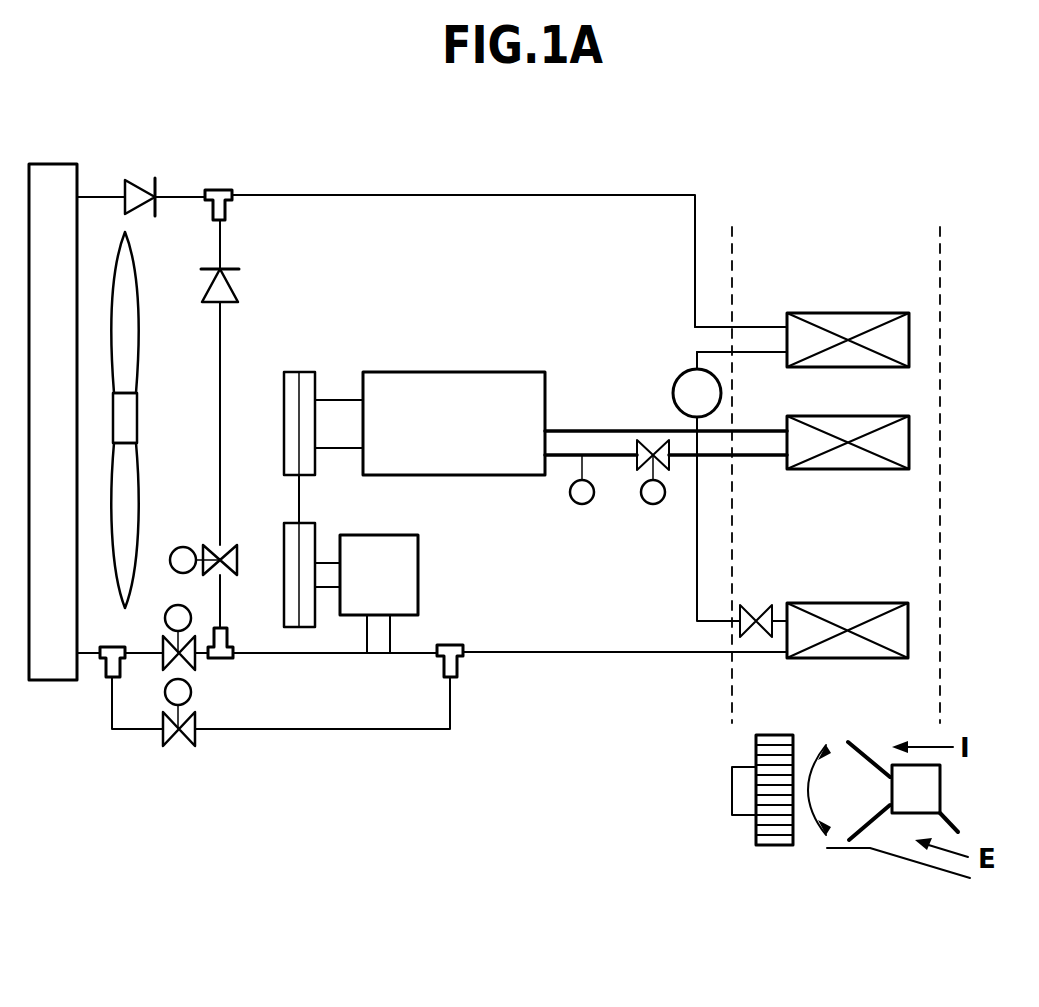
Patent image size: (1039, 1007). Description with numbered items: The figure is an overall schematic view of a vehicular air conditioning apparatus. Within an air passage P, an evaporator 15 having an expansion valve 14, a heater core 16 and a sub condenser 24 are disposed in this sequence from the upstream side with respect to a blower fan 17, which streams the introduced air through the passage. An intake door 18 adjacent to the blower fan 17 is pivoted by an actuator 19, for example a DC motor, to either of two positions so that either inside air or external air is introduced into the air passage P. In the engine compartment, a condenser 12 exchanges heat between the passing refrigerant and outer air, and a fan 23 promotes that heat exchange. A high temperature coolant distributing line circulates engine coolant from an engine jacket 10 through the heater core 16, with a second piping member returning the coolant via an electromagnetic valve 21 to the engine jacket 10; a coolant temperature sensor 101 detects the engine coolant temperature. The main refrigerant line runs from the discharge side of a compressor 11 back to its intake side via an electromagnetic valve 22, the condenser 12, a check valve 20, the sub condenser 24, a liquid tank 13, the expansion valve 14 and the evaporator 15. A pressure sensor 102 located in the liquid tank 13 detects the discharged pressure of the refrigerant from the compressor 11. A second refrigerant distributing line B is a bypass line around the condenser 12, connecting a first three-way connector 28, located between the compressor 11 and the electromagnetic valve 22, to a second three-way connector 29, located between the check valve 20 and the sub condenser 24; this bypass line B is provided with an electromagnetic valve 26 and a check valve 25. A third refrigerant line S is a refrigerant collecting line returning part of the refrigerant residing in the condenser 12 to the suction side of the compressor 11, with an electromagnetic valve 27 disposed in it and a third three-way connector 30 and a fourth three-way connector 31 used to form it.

The engine jacket 10 is at (460, 372).
The compressor 11 is at (418, 575).
The condenser 12 is at (62, 166).
The liquid tank 13 is at (675, 380).
The pressure sensor 102 is at (647, 360).
The expansion valve 14 is at (748, 608).
The evaporator 15 is at (825, 603).
The heater core 16 is at (848, 469).
The blower fan 17 is at (740, 815).
The intake door 18 is at (862, 745).
The actuator 19 is at (940, 795).
The check valve 20 is at (158, 185).
The electromagnetic valve 21 is at (668, 462).
The electromagnetic valve 22 is at (195, 660).
The fan 23 is at (140, 295).
The sub condenser 24 is at (825, 313).
The check valve 25 is at (232, 290).
The electromagnetic valve 26 is at (213, 545).
The electromagnetic valve 27 is at (195, 735).
The first three-way connector 28 is at (233, 655).
The second three-way connector 29 is at (222, 190).
The third three-way connector 30 is at (450, 645).
The fourth three-way connector 31 is at (104, 677).
The coolant temperature sensor 101 is at (582, 505).
The second refrigerant distributing line B is at (220, 388).
The third refrigerant line S is at (388, 729).
The air passage P is at (787, 260).